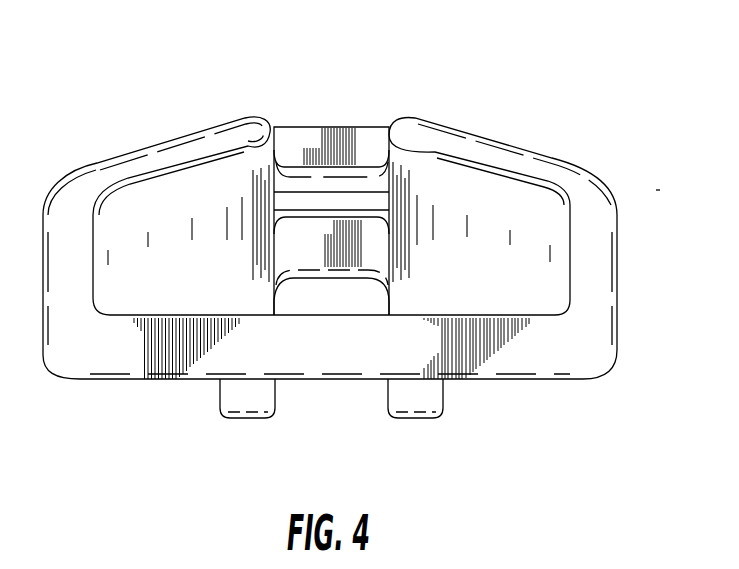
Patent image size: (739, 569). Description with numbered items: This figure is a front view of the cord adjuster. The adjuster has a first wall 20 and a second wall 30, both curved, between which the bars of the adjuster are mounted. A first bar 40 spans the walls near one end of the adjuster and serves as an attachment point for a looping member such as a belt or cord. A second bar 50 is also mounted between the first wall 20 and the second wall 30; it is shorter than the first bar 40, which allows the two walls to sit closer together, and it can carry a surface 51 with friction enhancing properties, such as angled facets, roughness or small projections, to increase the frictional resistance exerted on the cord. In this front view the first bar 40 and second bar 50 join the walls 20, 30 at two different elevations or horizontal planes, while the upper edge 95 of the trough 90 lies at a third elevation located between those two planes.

The first wall 20 is at (78, 195).
The second wall 30 is at (572, 183).
The first bar 40 is at (520, 353).
The second bar 50 is at (334, 190).
The surface 51 is at (300, 190).
The trough 90 is at (380, 288).
The upper edge 95 is at (316, 280).